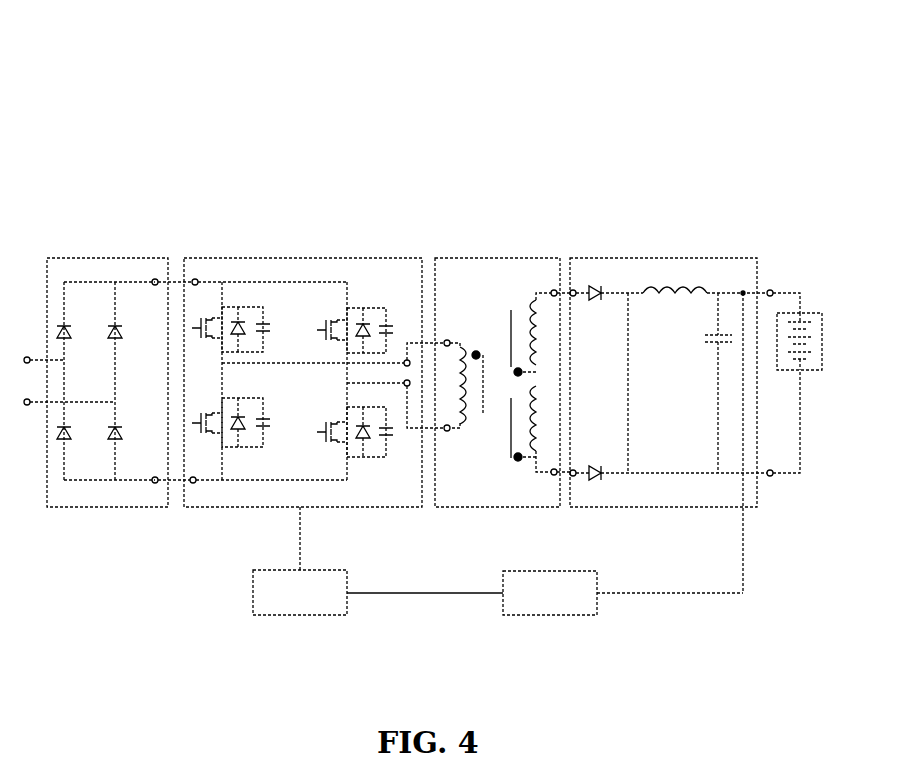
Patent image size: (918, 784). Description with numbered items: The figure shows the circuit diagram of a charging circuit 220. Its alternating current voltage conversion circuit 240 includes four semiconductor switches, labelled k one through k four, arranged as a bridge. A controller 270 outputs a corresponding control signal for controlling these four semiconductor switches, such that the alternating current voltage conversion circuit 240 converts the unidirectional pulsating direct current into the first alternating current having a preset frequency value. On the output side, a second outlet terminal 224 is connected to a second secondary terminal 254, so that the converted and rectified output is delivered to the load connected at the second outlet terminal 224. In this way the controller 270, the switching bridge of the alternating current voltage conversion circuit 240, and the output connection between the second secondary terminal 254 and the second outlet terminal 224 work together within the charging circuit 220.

The charging circuit 220 is at (572, 85).
The alternating current voltage conversion circuit 240 is at (303, 258).
The second secondary terminal 254 is at (554, 476).
The second outlet terminal 224 is at (775, 477).
The controller 270 is at (300, 615).